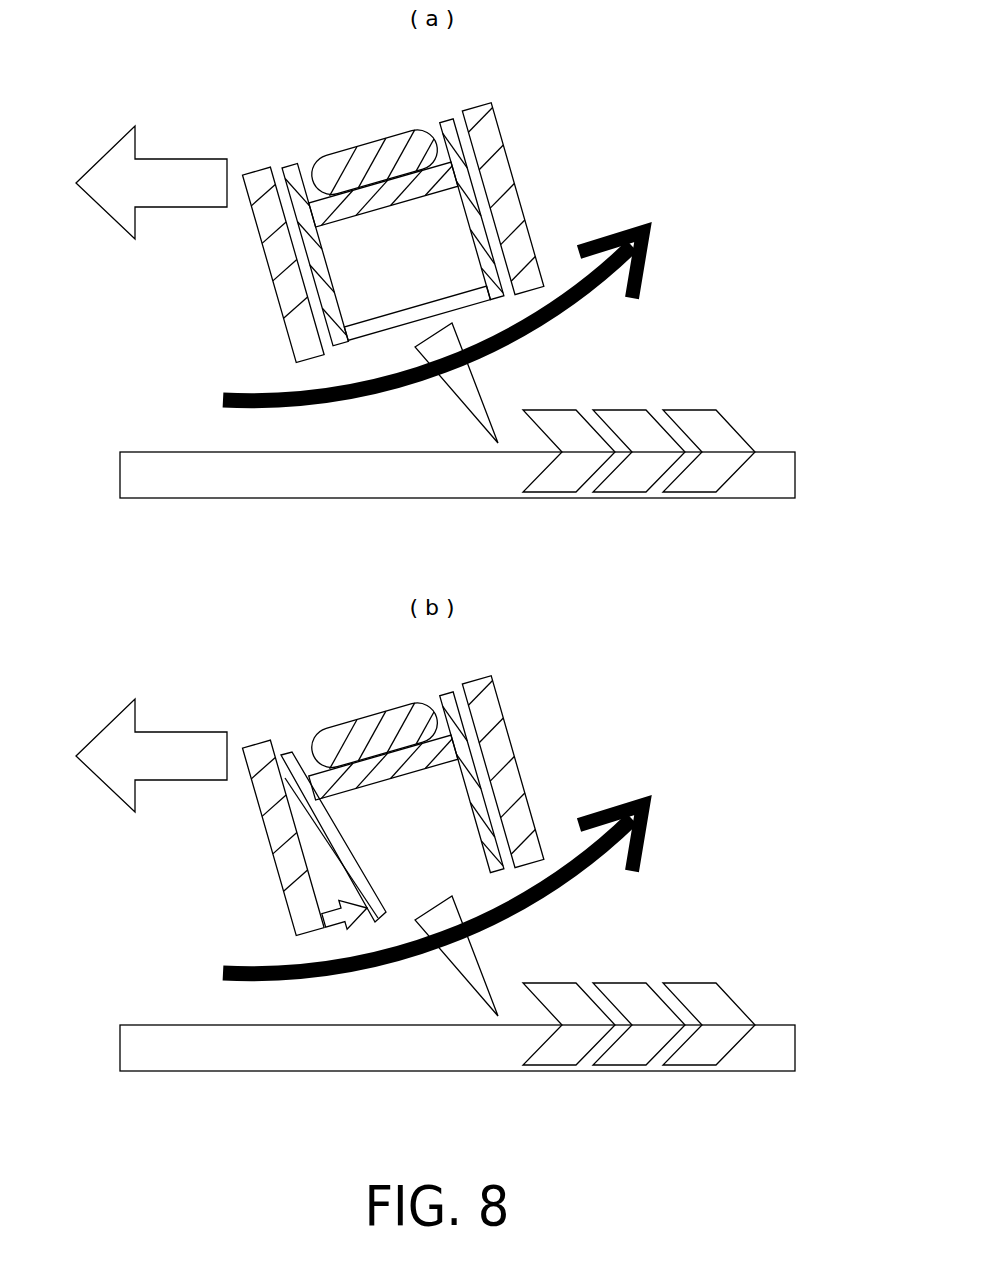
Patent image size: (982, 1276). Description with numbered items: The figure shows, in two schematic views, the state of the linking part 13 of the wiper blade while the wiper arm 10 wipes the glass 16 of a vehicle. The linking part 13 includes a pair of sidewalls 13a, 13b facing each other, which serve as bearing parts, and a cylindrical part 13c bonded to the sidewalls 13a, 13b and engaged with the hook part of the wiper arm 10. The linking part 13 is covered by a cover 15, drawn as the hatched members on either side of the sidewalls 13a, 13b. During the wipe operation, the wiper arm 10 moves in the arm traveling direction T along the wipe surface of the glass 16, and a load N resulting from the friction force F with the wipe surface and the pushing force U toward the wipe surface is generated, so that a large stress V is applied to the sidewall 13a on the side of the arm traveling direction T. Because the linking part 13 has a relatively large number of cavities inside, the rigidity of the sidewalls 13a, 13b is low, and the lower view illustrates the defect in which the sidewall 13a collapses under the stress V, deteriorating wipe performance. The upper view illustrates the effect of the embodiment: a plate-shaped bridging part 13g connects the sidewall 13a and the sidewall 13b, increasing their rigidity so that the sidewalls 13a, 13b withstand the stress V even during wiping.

The wiper arm 10 is at (372, 147).
The linking part 13 is at (392, 492).
The sidewall 13a is at (317, 250).
The sidewall 13b is at (482, 252).
The cylindrical part 13c is at (430, 187).
The bridging part 13g is at (372, 327).
The cover 15 is at (500, 166).
The glass 16 is at (368, 490).
The arm traveling direction T is at (187, 170).
The load N is at (570, 305).
The pushing force U is at (458, 387).
The friction force F is at (622, 418).
The stress V is at (343, 922).